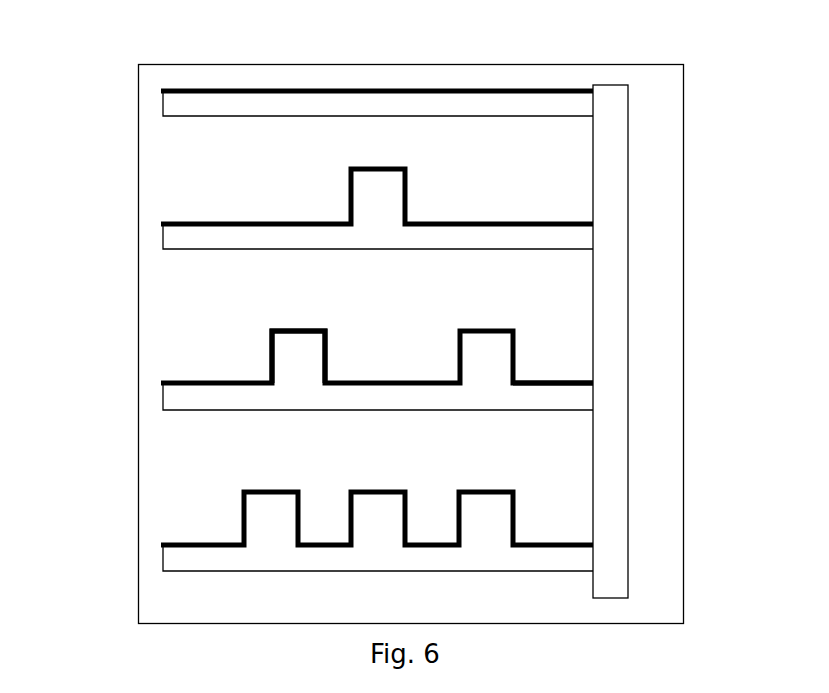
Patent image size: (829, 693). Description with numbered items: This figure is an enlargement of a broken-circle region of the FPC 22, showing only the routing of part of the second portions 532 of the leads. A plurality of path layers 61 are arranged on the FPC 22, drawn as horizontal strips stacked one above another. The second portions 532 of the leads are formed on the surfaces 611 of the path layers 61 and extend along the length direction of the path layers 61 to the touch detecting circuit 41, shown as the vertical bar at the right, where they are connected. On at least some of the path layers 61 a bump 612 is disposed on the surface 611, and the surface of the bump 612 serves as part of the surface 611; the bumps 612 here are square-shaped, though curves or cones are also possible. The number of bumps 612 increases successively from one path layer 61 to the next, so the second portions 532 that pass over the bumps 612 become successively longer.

The FPC 22 is at (138, 74).
The touch detecting circuit 41 is at (609, 85).
The path layers 61 is at (181, 400).
The surfaces of the path layers 611 is at (595, 382).
The bump 612 is at (287, 352).
The second portion 532 is at (190, 382).